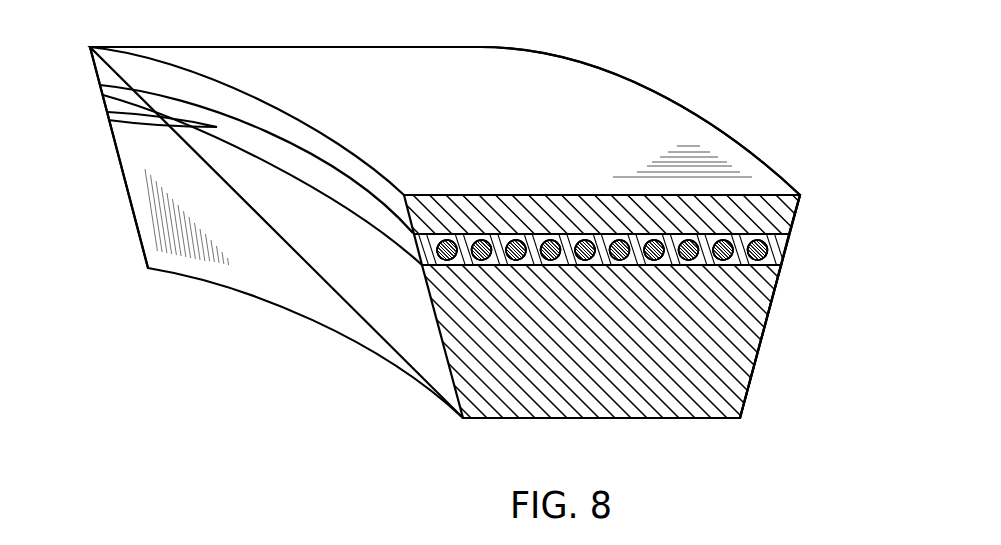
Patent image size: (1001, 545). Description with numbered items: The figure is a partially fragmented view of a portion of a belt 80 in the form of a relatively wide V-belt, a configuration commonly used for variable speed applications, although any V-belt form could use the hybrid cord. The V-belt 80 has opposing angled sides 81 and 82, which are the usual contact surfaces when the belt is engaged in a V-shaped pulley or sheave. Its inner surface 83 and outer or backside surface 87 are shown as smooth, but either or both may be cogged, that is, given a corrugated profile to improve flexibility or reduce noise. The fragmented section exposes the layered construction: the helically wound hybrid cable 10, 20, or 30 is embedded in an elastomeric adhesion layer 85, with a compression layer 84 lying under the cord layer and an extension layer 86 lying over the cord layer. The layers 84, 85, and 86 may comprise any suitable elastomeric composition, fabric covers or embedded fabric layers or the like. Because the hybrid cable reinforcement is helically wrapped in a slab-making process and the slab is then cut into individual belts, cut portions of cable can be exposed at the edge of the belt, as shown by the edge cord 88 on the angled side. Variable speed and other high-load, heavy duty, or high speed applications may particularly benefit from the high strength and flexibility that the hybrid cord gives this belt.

The belt 80 is at (822, 101).
The angled side 81 is at (392, 318).
The angled side 82 is at (768, 317).
The inner surface 83 is at (703, 420).
The compression layer 84 is at (743, 358).
The elastomeric adhesion layer 85 is at (787, 243).
The extension layer 86 is at (775, 195).
The outer or backside surface 87 is at (587, 95).
The edge cord 88 is at (133, 110).
The hybrid cable 10 is at (778, 280).
The hybrid cable 20 is at (778, 280).
The hybrid cable 30 is at (778, 280).